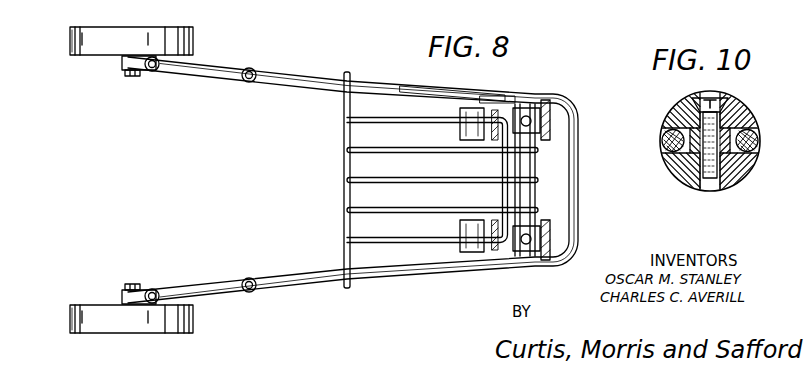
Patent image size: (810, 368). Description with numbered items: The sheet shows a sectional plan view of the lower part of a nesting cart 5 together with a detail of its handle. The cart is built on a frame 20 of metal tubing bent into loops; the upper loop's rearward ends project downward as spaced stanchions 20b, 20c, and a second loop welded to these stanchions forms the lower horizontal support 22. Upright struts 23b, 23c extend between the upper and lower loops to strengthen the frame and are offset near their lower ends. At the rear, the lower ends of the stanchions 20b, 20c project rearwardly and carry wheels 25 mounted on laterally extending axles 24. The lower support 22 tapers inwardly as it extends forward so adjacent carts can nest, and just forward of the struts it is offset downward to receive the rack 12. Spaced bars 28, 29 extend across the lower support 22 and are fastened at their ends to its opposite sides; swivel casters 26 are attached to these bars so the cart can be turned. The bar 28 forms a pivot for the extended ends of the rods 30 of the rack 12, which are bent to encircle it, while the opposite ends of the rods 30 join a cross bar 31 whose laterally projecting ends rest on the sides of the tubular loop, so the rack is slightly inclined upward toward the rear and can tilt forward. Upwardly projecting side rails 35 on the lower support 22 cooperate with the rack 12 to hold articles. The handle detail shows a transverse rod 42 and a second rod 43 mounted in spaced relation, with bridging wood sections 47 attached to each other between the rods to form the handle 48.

In FIG. 8, the wheeled frame assembly 5 is at (46, 243).
In FIG. 8, the rack 12 is at (345, 172).
In FIG. 8, the frame 20 is at (406, 295).
In FIG. 8, the stanchion 20b is at (157, 72).
In FIG. 8, the stanchion 20c is at (153, 290).
In FIG. 8, the lower horizontal support 22 is at (430, 89).
In FIG. 8, the upright strut 23b is at (249, 68).
In FIG. 8, the upright strut 23c is at (251, 292).
In FIG. 8, the axle 24 is at (133, 26).
In FIG. 8, the wheel 25 is at (80, 50).
In FIG. 8, the caster 26 is at (460, 124).
In FIG. 8, the spaced bar 28 is at (538, 163).
In FIG. 8, the spaced bar 29 is at (515, 166).
In FIG. 8, the rod 30 is at (540, 183).
In FIG. 8, the cross bar 31 is at (344, 106).
In FIG. 8, the side rail 35 is at (380, 87).
In FIG. 10, the transverse rod 42 is at (662, 138).
In FIG. 10, the second rod 43 is at (758, 134).
In FIG. 10, the bridging wood section 47 is at (690, 115).
In FIG. 10, the handle 48 is at (748, 185).